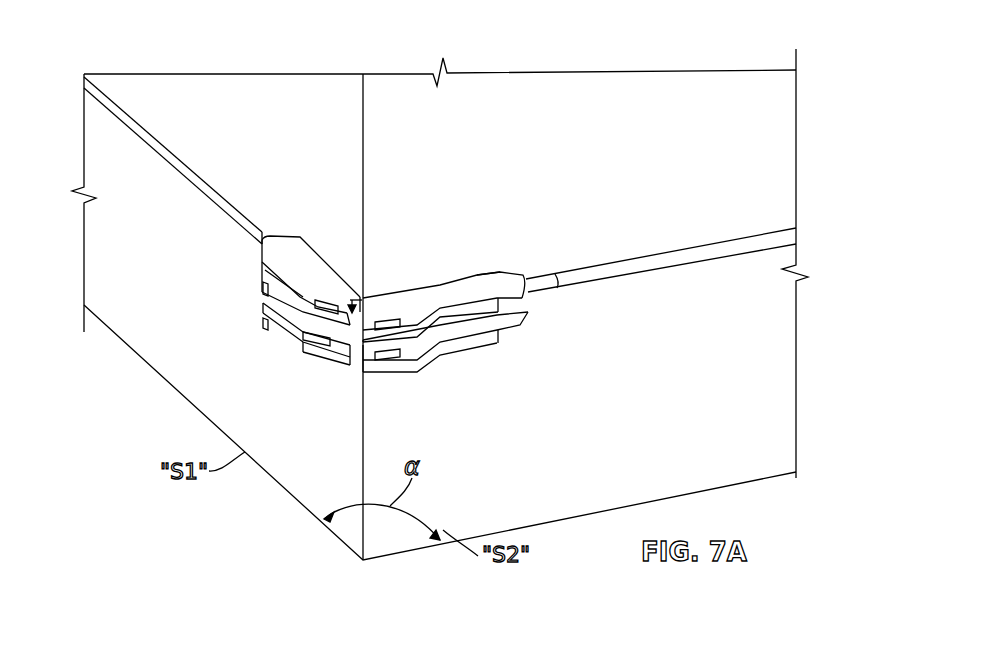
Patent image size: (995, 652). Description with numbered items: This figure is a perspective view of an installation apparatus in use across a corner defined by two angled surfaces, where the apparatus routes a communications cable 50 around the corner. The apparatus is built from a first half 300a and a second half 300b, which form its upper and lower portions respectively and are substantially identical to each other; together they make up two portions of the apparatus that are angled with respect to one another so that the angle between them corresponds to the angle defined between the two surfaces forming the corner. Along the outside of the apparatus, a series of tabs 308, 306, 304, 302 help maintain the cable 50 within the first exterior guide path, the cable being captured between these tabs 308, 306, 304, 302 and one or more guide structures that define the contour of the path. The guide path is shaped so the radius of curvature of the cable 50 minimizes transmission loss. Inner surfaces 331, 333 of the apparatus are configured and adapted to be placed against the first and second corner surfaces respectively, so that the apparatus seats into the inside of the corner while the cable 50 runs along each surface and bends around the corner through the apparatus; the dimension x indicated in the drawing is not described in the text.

The communications cable 50 is at (182, 161).
The first half 300a is at (305, 255).
The second half 300b is at (322, 362).
The tab 302 is at (517, 273).
The tab 304 is at (404, 318).
The tab 306 is at (318, 303).
The tab 308 is at (283, 265).
The inner surface 331 is at (352, 300).
The inner surface 333 is at (490, 270).
The displacement distance x is at (363, 283).